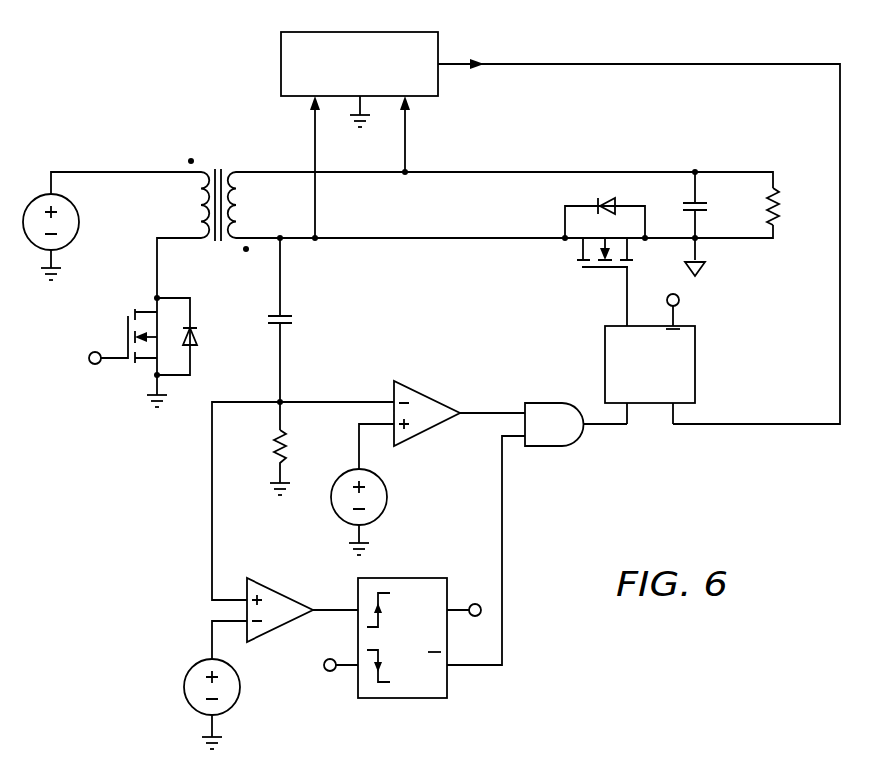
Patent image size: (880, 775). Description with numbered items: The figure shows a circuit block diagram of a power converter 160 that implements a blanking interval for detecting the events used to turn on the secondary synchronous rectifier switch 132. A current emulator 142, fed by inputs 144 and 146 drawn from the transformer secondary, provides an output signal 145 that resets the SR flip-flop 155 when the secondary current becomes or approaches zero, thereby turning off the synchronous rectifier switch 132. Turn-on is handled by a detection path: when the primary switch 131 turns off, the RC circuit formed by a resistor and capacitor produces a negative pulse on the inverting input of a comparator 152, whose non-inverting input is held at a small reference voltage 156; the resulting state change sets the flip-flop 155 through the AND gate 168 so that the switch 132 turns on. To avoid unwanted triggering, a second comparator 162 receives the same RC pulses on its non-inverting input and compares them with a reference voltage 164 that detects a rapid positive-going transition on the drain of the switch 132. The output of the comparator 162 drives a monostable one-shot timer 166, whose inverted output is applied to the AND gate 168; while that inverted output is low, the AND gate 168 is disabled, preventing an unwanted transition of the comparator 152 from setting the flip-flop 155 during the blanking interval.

The power converter 160 is at (102, 68).
The current emulator 142 is at (281, 58).
The current emulator input signal 144 is at (314, 133).
The output signal 145 is at (594, 63).
The current emulator input signal 146 is at (405, 133).
The primary switch 131 is at (107, 331).
The synchronous rectifier switch 132 is at (597, 282).
The comparator 152 is at (430, 392).
The SR flip-flop 155 is at (697, 365).
The reference voltage 156 is at (388, 497).
The comparator 162 is at (283, 592).
The reference voltage 164 is at (183, 687).
The monostable one-shot timer 166 is at (403, 699).
The AND gate 168 is at (548, 447).